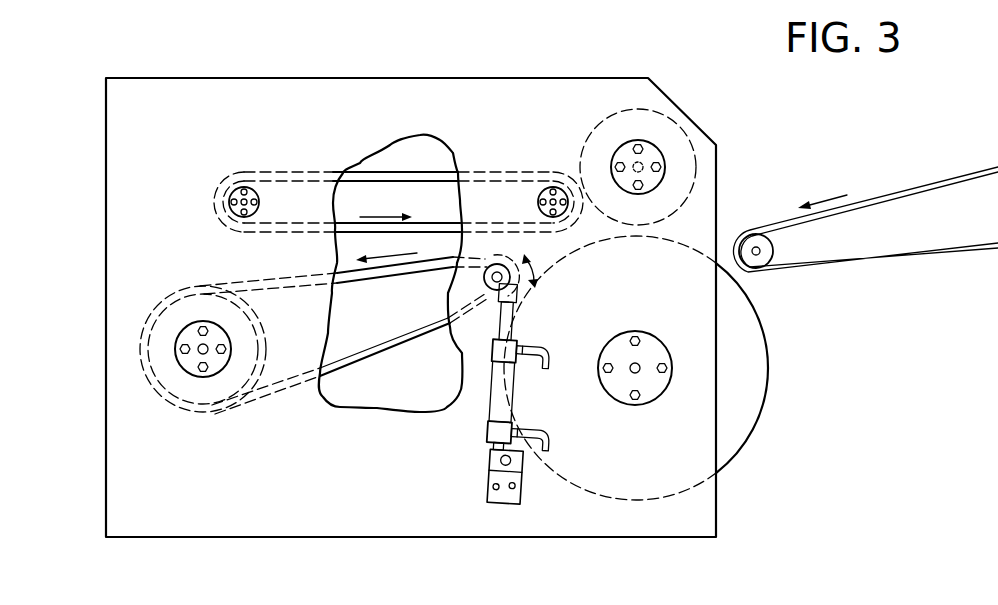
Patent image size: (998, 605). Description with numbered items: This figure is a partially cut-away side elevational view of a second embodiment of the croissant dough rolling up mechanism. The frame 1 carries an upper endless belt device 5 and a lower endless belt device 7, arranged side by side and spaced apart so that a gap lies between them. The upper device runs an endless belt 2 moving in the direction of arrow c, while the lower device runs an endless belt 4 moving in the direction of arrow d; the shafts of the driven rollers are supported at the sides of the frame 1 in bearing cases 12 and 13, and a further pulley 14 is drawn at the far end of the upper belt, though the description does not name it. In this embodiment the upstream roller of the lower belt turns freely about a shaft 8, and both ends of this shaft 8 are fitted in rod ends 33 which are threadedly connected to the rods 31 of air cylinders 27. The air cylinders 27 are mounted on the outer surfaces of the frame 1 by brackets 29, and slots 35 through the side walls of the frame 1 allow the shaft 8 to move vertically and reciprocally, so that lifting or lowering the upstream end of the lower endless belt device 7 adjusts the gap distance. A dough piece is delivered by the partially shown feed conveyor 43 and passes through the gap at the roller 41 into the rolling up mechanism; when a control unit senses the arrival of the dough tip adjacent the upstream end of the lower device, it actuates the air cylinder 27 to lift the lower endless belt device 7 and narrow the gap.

The frame 1 is at (438, 78).
The endless belt 2 is at (417, 172).
The endless belt 4 is at (422, 337).
The upper endless belt device 5 is at (372, 168).
The lower endless belt device 7 is at (382, 353).
The shaft 8 is at (510, 281).
The bearing case 12 is at (250, 215).
The bearing case 13 is at (223, 370).
The pulley 14 is at (541, 191).
The air cylinder 27 is at (522, 391).
The bracket 29 is at (531, 493).
The rod 31 is at (511, 316).
The rod end 33 is at (489, 295).
The slot 35 is at (512, 258).
The roller 41 is at (770, 369).
The dough piece feed conveyor 43 is at (915, 177).